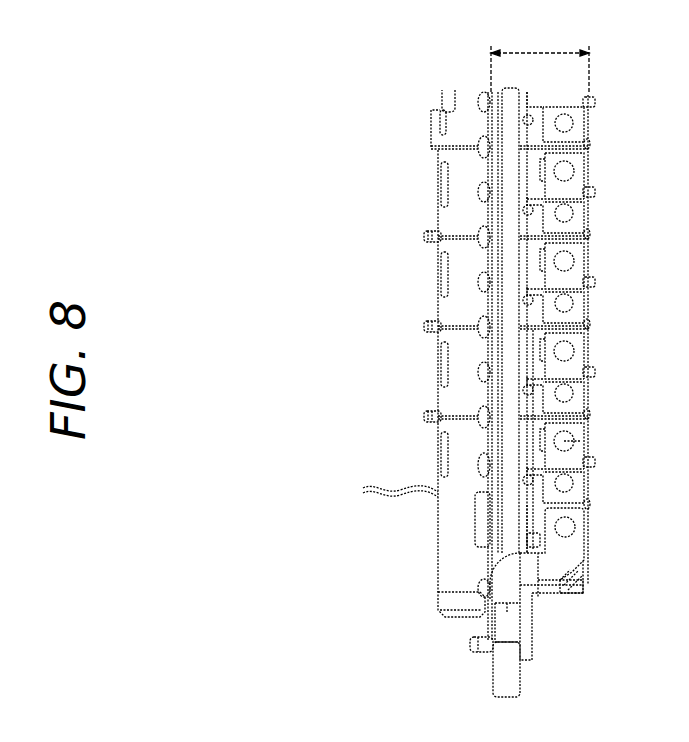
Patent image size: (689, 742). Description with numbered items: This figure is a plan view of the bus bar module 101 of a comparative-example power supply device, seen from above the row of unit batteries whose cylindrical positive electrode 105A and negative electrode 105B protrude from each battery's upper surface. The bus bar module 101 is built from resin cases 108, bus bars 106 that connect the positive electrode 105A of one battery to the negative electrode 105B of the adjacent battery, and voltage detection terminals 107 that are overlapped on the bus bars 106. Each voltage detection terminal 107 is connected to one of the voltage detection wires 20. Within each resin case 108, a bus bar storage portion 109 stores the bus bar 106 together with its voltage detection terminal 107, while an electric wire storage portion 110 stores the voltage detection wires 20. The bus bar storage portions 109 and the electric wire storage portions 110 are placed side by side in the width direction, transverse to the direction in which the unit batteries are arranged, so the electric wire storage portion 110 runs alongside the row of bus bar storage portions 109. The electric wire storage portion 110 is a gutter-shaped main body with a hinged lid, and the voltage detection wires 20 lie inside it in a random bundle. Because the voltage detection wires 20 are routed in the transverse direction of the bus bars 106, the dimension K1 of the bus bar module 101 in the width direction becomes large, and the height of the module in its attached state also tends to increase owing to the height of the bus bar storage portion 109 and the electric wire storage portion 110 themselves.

The dimension in the width direction K1 is at (540, 61).
The voltage detection wire 20 is at (508, 470).
The bus bar module 101 is at (598, 170).
The positive electrode 105A is at (587, 500).
The negative electrode 105B is at (582, 437).
The bus bar 106 is at (574, 452).
The voltage detection terminal 107 is at (582, 478).
The resin case 108 is at (588, 354).
The bus bar storage portion 109 is at (588, 310).
The electric wire storage portion 110 is at (486, 398).